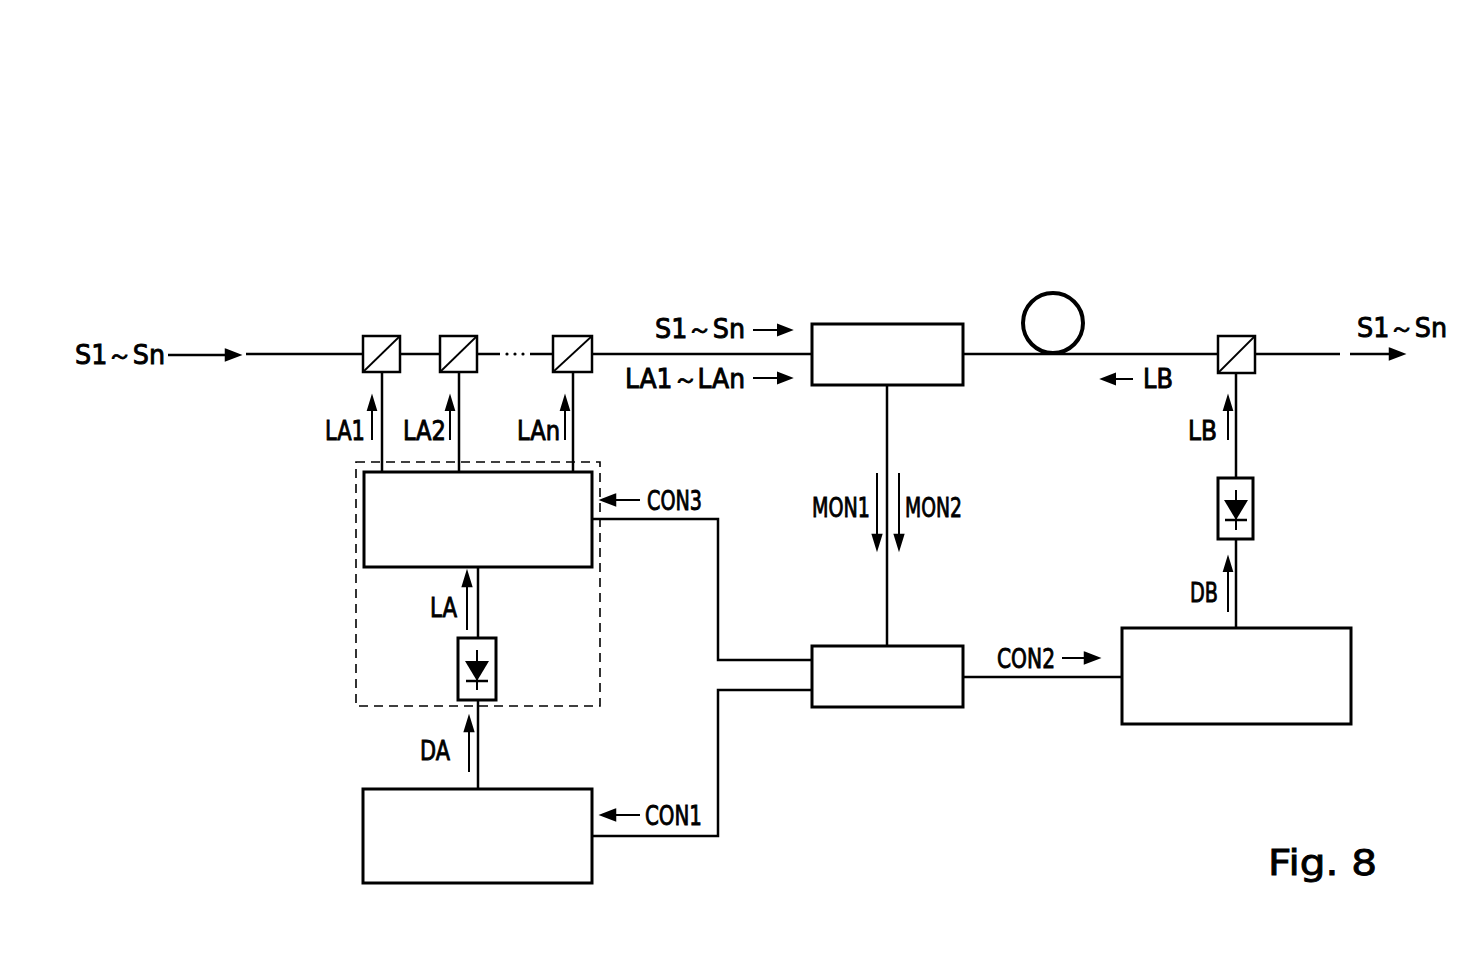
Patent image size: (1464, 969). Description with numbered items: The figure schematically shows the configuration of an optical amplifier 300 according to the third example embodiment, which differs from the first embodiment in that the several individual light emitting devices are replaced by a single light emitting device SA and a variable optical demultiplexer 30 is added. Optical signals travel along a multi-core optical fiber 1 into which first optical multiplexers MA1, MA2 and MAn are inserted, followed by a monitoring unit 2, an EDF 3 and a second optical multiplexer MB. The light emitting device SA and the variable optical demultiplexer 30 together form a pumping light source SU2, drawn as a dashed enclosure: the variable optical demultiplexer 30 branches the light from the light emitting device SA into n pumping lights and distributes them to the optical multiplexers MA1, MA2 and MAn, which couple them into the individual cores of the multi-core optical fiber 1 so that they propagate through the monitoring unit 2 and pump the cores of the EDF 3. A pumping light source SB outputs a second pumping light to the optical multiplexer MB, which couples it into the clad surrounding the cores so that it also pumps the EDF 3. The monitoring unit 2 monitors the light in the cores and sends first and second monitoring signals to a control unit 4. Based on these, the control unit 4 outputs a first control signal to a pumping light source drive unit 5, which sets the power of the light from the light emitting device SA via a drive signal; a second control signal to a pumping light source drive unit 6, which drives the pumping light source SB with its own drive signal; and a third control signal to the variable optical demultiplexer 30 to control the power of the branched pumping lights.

The optical amplifier 300 is at (771, 138).
The multi-core optical fiber 1 is at (296, 348).
The optical multiplexer MA1 is at (383, 334).
The optical multiplexer MA2 is at (458, 334).
The optical multiplexer MAn is at (572, 334).
The monitoring unit 2 is at (881, 322).
The EDF 3 is at (1053, 292).
The optical multiplexer MB is at (1236, 334).
The control unit 4 is at (930, 708).
The pumping light source SU2 is at (600, 463).
The variable optical demultiplexer 30 is at (364, 517).
The light emitting device SA is at (458, 660).
The pumping light source drive unit 5 is at (363, 833).
The pumping light source SB is at (1254, 490).
The pumping light source drive unit 6 is at (1351, 677).